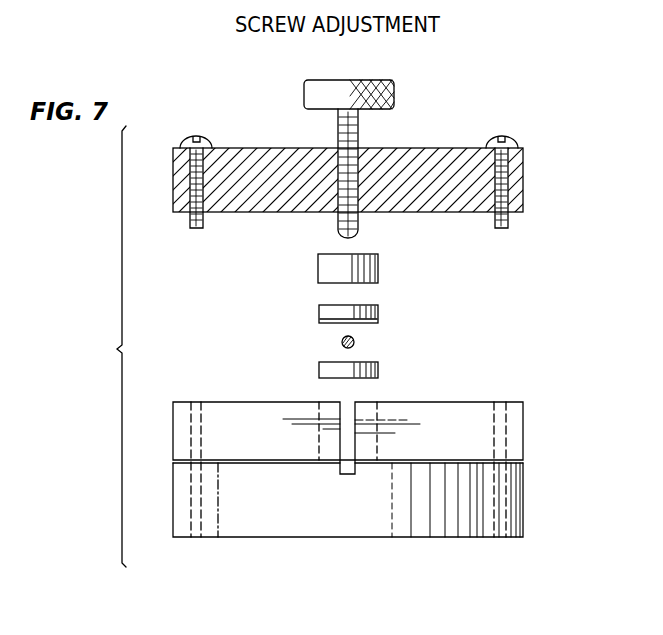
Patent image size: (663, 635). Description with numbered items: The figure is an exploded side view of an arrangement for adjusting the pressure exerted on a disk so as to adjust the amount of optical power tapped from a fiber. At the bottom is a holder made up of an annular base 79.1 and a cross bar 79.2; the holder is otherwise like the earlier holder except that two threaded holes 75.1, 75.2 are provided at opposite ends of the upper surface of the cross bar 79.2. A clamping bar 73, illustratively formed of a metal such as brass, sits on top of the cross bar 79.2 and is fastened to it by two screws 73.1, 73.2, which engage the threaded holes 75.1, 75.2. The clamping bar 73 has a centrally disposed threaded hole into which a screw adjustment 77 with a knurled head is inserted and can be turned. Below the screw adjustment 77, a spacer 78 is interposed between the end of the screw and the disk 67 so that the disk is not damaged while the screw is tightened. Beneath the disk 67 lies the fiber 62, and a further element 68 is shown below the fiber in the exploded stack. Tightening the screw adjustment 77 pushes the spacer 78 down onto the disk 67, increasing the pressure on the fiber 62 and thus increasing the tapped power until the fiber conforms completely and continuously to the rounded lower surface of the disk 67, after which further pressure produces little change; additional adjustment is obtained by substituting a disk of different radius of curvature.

The screw adjustment 77 is at (338, 80).
The clamping bar 73 is at (437, 148).
The screw 73.1 is at (198, 140).
The screw 73.2 is at (508, 142).
The spacer 78 is at (378, 270).
The disk 67 is at (378, 316).
The fiber 62 is at (341, 341).
The threaded insert 68 is at (378, 373).
The cross bar 79.2 is at (258, 412).
The annular base 79.1 is at (277, 530).
The threaded hole 75.1 is at (195, 402).
The threaded hole 75.2 is at (499, 406).